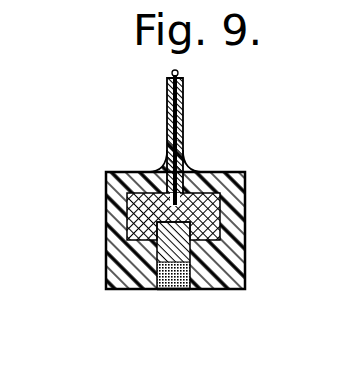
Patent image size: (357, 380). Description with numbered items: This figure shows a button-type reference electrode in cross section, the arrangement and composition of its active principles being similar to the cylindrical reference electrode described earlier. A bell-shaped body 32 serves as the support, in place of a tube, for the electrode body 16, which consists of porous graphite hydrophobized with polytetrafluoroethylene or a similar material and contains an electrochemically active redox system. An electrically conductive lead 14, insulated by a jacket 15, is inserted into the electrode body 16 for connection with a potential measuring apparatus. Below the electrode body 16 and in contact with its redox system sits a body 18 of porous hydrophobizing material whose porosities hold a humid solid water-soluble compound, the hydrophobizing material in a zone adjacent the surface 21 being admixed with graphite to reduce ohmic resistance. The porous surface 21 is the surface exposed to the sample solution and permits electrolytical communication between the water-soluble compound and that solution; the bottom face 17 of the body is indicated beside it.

The electrically conductive lead 14 is at (171, 74).
The jacket 15 is at (167, 120).
The electrode body 16 is at (128, 218).
The bottom face 17 is at (158, 290).
The cylindrical body of porous hydrophobizing material 18 is at (157, 250).
The active surface 21 is at (178, 290).
The bell-shaped body 32 is at (113, 184).